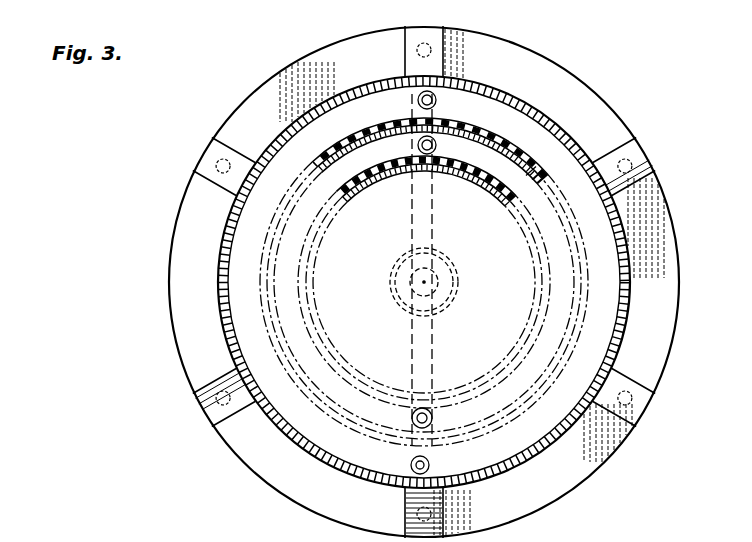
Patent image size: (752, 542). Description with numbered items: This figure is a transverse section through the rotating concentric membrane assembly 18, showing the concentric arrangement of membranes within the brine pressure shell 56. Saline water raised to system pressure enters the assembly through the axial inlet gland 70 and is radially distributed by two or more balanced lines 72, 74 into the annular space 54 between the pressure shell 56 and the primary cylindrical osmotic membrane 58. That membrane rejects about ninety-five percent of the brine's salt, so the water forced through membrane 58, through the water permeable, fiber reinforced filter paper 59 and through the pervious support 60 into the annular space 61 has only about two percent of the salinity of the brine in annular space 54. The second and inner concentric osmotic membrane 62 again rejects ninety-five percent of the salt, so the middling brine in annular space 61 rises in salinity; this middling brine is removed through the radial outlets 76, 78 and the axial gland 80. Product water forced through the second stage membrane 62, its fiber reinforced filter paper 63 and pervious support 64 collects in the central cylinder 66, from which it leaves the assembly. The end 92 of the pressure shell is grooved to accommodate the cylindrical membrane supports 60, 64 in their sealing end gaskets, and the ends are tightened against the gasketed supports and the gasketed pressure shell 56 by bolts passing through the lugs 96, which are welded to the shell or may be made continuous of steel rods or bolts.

The rotating concentric membrane assembly 18 is at (520, 88).
The annular space 54 is at (525, 135).
The pressure shell 56 is at (470, 79).
The primary cylindrical osmotic membrane 58 is at (451, 150).
The fiber reinforced filter paper 59 is at (496, 150).
The pervious support 60 is at (540, 172).
The annular space 61 is at (470, 152).
The second and inner concentric osmotic membrane 62 is at (427, 193).
The fiber reinforced filter paper 63 is at (485, 200).
The pervious support 64 is at (462, 196).
The central cylinder 66 is at (479, 347).
The axial inlet gland 70 is at (403, 262).
The balanced line 72 is at (411, 465).
The balanced line 74 is at (421, 93).
The radial outlet 76 is at (412, 418).
The radial outlet 78 is at (410, 152).
The axial gland 80 is at (424, 281).
The end of the pressure shell 92 is at (665, 284).
The lugs 96 is at (208, 150).